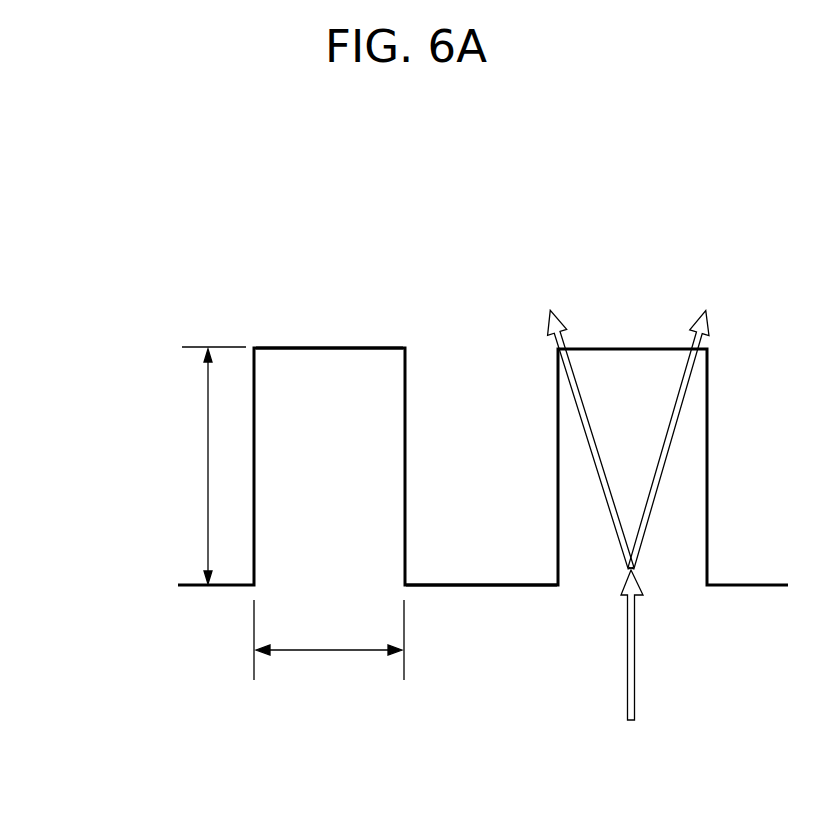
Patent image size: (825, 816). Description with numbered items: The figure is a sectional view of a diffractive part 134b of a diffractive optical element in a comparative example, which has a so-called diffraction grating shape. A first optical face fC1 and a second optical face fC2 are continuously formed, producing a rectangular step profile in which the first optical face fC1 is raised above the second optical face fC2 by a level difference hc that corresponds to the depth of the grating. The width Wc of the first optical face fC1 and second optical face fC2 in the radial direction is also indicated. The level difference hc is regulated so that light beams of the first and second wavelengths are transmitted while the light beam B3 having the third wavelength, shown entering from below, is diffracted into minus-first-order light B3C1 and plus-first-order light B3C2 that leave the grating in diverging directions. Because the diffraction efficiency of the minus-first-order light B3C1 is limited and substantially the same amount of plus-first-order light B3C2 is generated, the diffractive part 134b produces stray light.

The diffractive part 134b is at (570, 258).
The first optical face fC1 is at (325, 347).
The second optical face fC2 is at (476, 583).
The level difference hc is at (209, 465).
The width Wc is at (329, 640).
The light beam having the third wavelength B3 is at (643, 586).
The −first-order light B3C1 is at (545, 318).
The +first-order light B3C2 is at (718, 318).